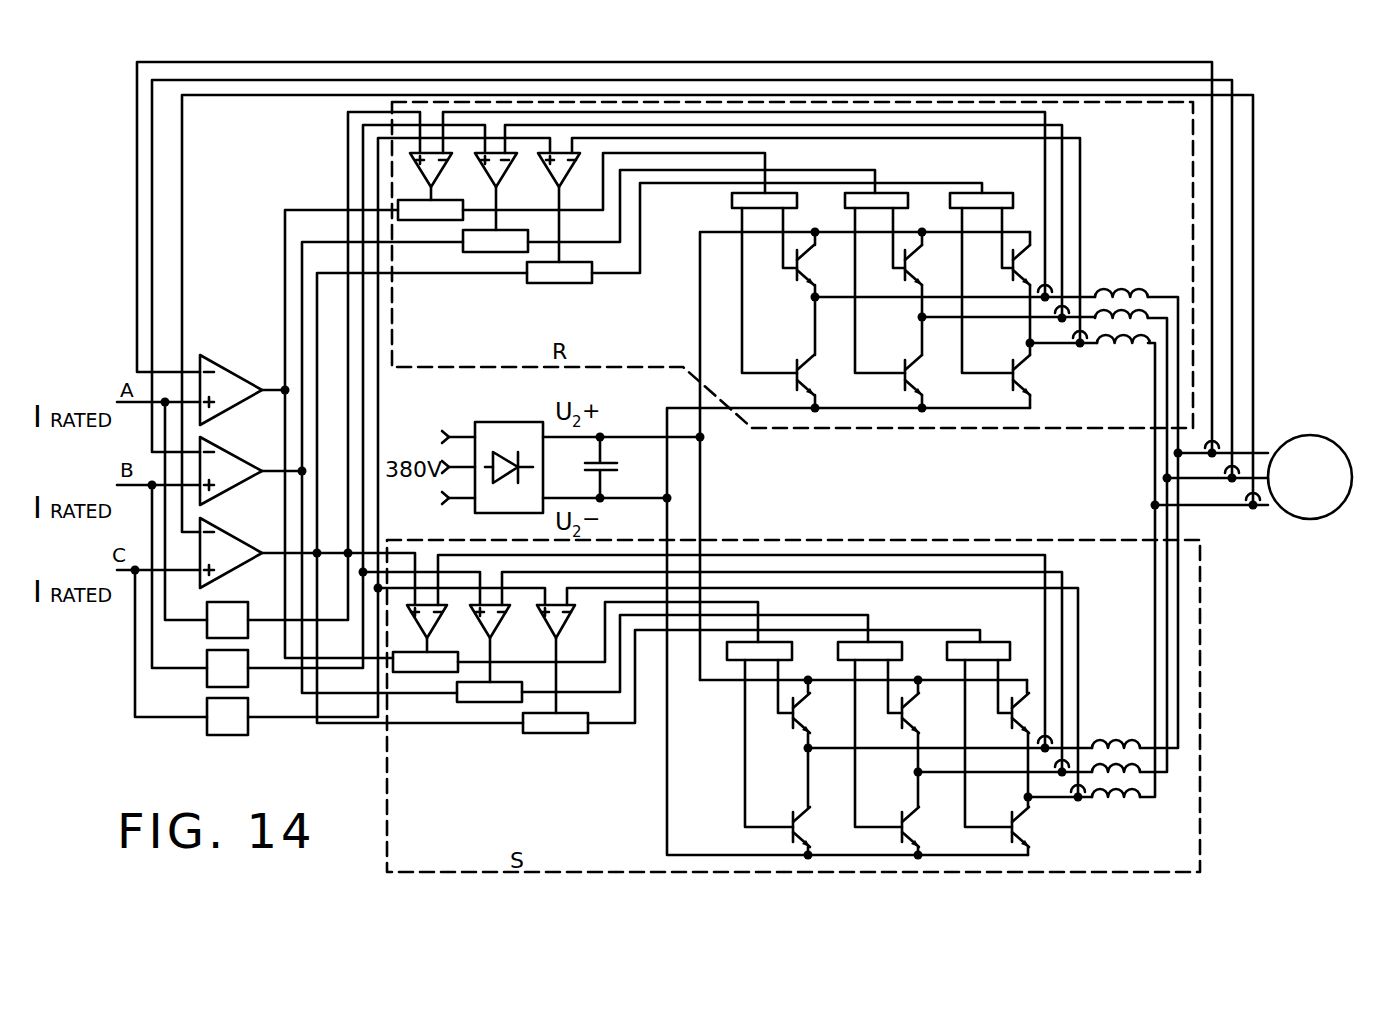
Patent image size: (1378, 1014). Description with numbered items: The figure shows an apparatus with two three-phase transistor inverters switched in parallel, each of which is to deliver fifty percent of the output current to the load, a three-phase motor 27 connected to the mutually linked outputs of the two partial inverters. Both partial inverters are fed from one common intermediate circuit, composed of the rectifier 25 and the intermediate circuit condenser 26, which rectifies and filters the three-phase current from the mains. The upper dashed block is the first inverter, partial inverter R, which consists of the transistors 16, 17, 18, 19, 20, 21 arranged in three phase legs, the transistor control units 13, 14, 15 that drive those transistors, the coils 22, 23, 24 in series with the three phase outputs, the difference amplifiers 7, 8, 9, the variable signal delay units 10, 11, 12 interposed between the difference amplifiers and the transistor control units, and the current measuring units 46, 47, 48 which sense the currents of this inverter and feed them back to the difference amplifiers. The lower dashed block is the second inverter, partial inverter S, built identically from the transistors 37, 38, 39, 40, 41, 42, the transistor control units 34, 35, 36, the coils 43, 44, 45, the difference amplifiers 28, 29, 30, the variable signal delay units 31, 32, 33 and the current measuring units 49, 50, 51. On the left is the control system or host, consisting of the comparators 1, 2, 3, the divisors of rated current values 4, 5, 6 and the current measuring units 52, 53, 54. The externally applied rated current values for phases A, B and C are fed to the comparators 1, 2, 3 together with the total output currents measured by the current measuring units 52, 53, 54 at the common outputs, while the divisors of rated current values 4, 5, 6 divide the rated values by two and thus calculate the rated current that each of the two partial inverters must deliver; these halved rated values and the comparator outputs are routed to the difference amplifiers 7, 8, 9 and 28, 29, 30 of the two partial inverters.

The comparator 1 is at (231, 387).
The comparator 2 is at (231, 469).
The comparator 3 is at (231, 550).
The divisor of rated current values 4 is at (239, 612).
The divisor of rated current values 5 is at (239, 661).
The divisor of rated current values 6 is at (239, 710).
The difference amplifier 7 is at (426, 173).
The difference amplifier 8 is at (490, 173).
The difference amplifier 9 is at (554, 173).
The variable signal delay unit 10 is at (430, 223).
The variable signal delay unit 11 is at (487, 251).
The variable signal delay unit 12 is at (559, 287).
The transistor control unit 13 is at (749, 210).
The transistor control unit 14 is at (863, 210).
The transistor control unit 15 is at (968, 210).
The transistor 16 is at (792, 268).
The transistor 17 is at (899, 268).
The transistor 18 is at (1008, 268).
The transistor 19 is at (792, 365).
The transistor 20 is at (900, 365).
The transistor 21 is at (1009, 365).
The coil 22 is at (1125, 286).
The coil 23 is at (1137, 308).
The coil 24 is at (1125, 351).
The rectifier 25 is at (509, 452).
The intermediate circuit condenser 26 is at (619, 467).
The three-phase motor 27 is at (1315, 482).
The difference amplifier 28 is at (417, 626).
The difference amplifier 29 is at (480, 626).
The difference amplifier 30 is at (546, 626).
The variable signal delay unit 31 is at (425, 675).
The variable signal delay unit 32 is at (478, 704).
The variable signal delay unit 33 is at (555, 737).
The transistor control unit 34 is at (748, 663).
The transistor control unit 35 is at (854, 649).
The transistor control unit 36 is at (961, 649).
The transistor 37 is at (784, 720).
The transistor 38 is at (893, 720).
The transistor 39 is at (1005, 720).
The transistor 40 is at (784, 832).
The transistor 41 is at (894, 832).
The transistor 42 is at (1002, 832).
The coil 43 is at (1120, 742).
The coil 44 is at (1140, 766).
The coil 45 is at (1120, 800).
The current measuring unit 46 is at (1049, 284).
The current measuring unit 47 is at (1066, 306).
The current measuring unit 48 is at (1081, 354).
The current measuring unit 49 is at (1050, 733).
The current measuring unit 50 is at (1064, 760).
The current measuring unit 51 is at (1081, 806).
The current measuring unit 52 is at (1218, 438).
The current measuring unit 53 is at (1238, 463).
The current measuring unit 54 is at (1251, 514).